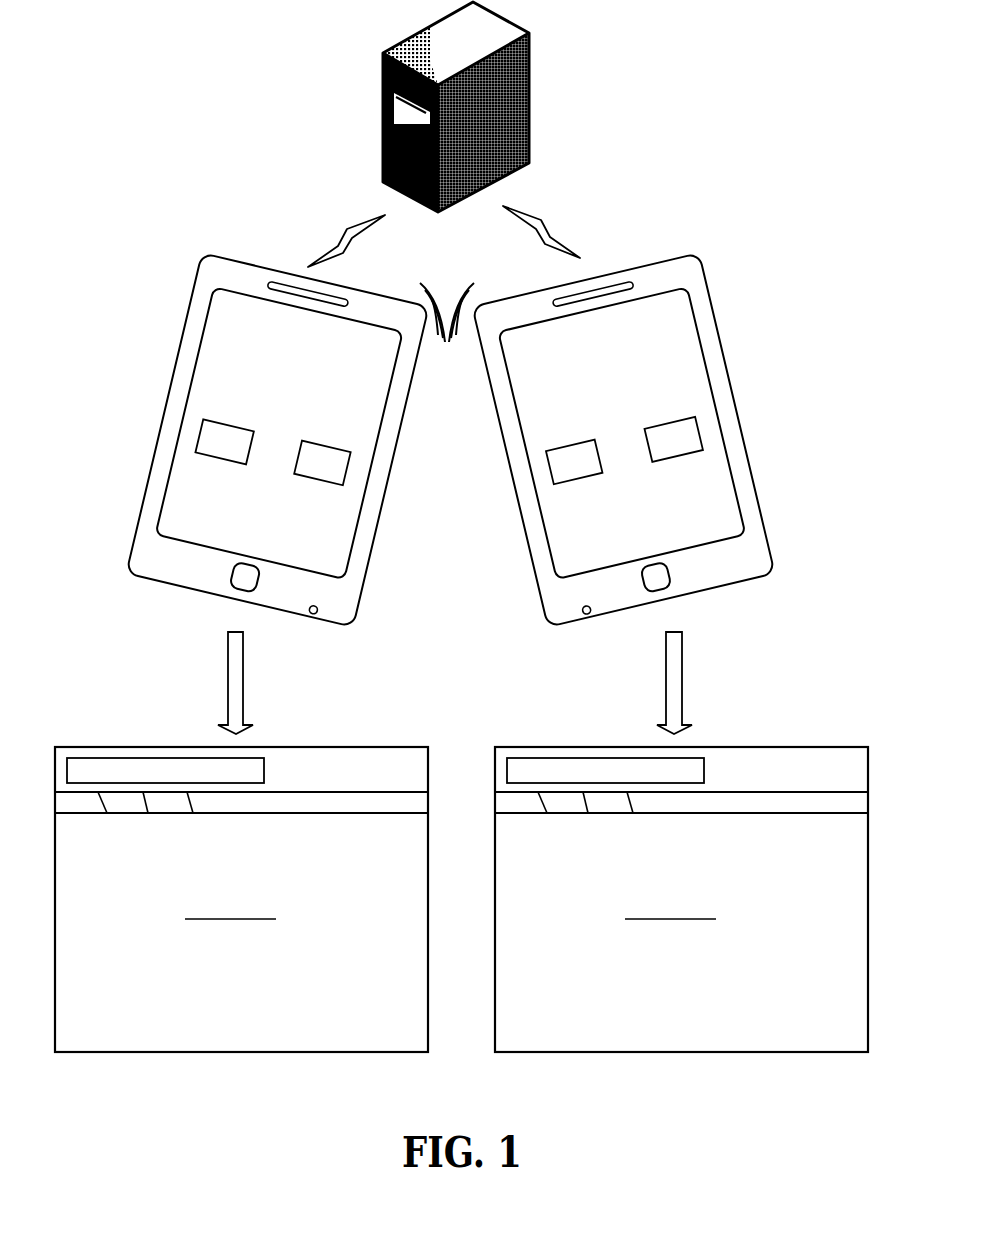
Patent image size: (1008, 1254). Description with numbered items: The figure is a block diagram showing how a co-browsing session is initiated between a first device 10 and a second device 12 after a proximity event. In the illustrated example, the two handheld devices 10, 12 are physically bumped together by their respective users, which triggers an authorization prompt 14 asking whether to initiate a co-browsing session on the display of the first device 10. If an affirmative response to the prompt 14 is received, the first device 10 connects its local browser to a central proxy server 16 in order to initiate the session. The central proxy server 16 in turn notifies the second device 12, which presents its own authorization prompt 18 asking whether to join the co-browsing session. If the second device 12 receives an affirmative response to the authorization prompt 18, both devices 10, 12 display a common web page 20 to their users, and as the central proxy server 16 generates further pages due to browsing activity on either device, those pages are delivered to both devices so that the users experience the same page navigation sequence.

The first device 10 is at (270, 420).
The second device 12 is at (625, 420).
The authorization prompt 14 is at (224, 441).
The central proxy server 16 is at (530, 80).
The authorization prompt 18 is at (674, 439).
The common web page 20 is at (308, 747).